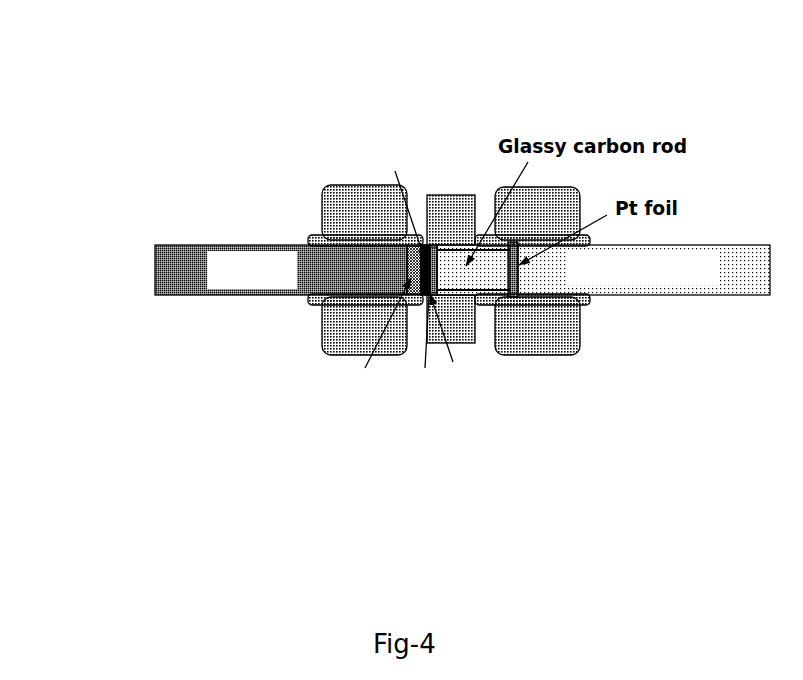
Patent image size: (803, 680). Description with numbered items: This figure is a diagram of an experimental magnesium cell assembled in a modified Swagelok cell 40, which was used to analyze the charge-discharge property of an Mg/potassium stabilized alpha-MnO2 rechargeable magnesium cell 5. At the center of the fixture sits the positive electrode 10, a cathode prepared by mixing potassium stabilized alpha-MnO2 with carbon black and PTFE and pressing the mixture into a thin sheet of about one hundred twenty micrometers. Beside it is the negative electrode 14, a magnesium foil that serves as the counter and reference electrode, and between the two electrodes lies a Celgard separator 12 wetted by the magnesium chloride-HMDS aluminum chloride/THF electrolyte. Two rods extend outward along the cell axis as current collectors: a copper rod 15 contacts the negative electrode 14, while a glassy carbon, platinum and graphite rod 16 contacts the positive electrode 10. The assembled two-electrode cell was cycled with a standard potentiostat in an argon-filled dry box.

The rechargeable magnesium cell 5 is at (445, 117).
The positive electrode 10 is at (362, 207).
The separator 12 is at (516, 337).
The negative electrode 14 is at (342, 336).
The copper rod current collector 15 is at (142, 256).
The glassy carbon, platinum and graphite rod current collector 16 is at (680, 233).
The modified Swagelok cell 40 is at (342, 458).